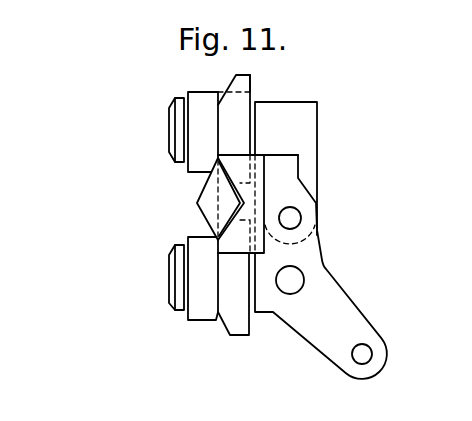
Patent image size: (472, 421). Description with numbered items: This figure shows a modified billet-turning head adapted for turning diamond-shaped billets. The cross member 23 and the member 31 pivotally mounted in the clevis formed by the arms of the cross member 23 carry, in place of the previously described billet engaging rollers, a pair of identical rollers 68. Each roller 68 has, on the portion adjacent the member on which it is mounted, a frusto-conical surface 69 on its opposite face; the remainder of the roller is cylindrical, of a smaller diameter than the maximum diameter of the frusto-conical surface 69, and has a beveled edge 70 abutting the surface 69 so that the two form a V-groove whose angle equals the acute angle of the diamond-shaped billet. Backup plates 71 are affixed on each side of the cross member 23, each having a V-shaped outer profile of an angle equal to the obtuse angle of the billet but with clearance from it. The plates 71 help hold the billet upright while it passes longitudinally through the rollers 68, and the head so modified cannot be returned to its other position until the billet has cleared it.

The cross member 23 is at (270, 302).
The member 31 is at (307, 137).
The rollers 68 is at (188, 172).
The frusto-conical surface 69 is at (229, 89).
The beveled edge 70 is at (217, 93).
The backup plates 71 is at (231, 247).